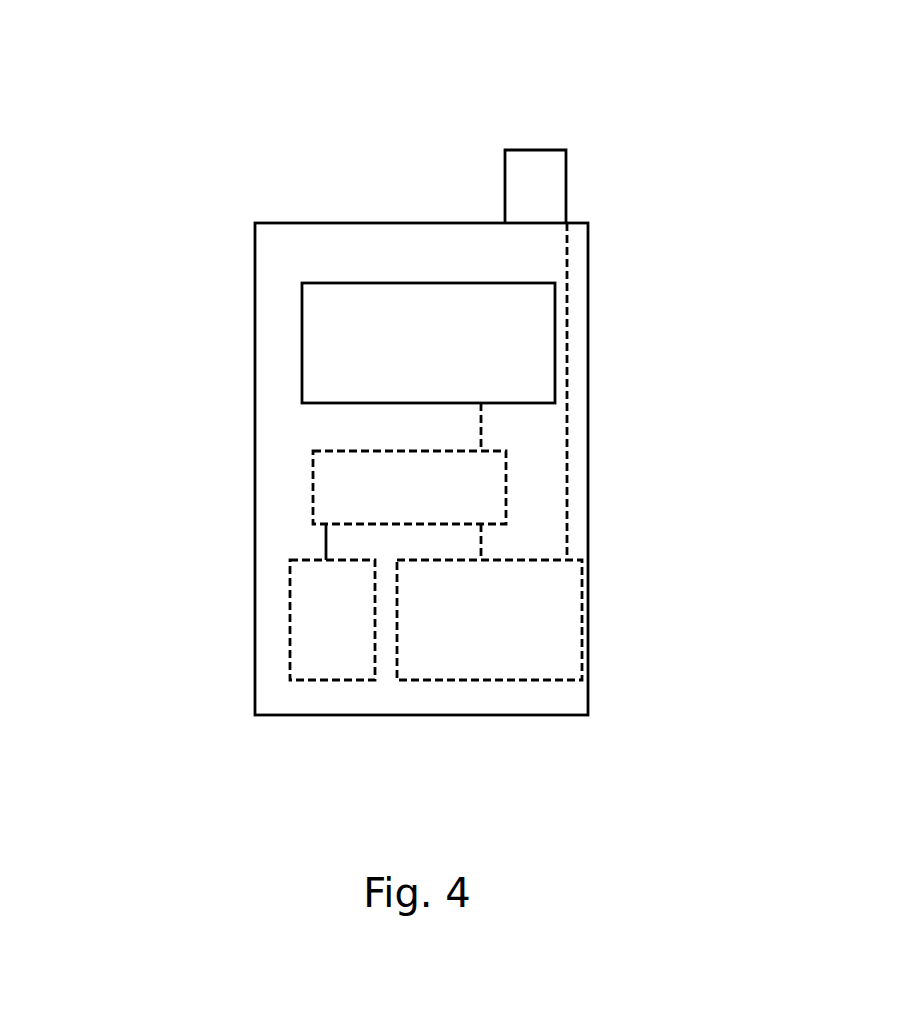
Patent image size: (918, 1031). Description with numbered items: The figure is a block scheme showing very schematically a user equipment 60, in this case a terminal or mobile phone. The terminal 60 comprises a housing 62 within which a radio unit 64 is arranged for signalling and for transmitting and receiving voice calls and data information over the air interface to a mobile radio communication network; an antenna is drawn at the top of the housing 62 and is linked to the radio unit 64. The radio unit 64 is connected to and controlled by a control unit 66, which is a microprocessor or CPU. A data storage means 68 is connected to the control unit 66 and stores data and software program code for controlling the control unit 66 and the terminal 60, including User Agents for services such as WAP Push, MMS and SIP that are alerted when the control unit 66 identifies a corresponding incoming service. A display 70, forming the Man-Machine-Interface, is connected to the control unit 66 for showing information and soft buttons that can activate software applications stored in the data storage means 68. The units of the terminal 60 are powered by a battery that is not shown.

The user equipment 60 is at (140, 71).
The housing 62 is at (358, 235).
The radio unit 64 is at (513, 656).
The control unit 66 is at (312, 499).
The data storage means 68 is at (300, 668).
The display 70 is at (310, 368).
The element antenna is at (565, 199).